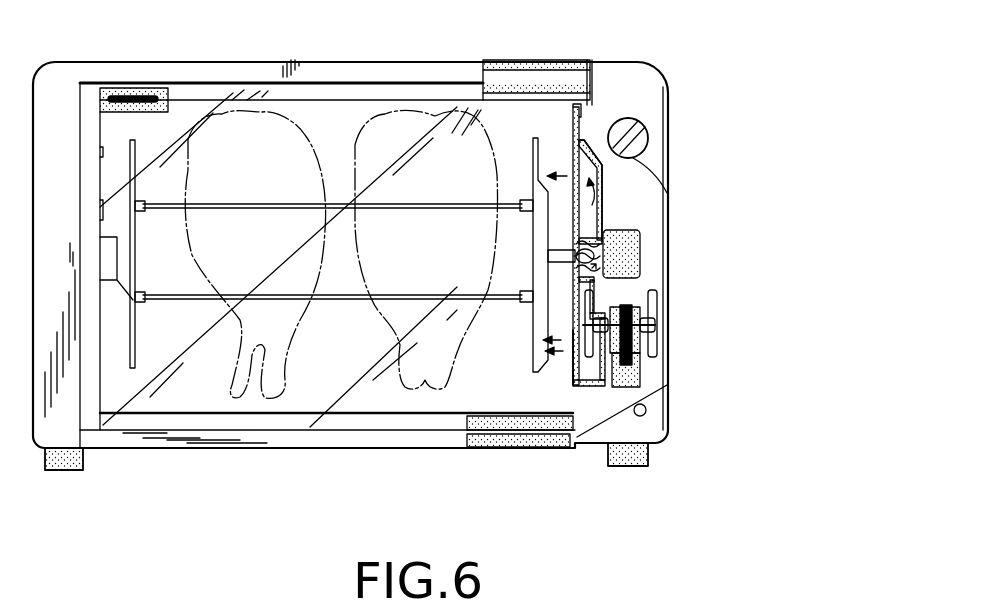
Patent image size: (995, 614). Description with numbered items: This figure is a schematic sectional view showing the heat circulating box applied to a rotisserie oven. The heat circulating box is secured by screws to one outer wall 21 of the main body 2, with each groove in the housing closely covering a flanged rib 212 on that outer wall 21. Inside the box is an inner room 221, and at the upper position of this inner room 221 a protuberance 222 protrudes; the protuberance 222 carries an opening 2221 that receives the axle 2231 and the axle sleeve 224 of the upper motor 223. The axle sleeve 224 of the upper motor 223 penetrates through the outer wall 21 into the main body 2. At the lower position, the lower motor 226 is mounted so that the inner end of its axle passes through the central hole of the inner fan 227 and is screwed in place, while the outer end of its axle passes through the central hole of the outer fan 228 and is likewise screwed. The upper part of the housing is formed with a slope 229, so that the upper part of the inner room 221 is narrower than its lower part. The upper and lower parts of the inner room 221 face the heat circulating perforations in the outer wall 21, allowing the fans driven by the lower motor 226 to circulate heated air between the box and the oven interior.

The main body 2 is at (667, 83).
The outer wall 21 is at (567, 372).
The flanged rib 212 is at (577, 372).
The inner room 221 is at (590, 383).
The protuberance 222 is at (690, 311).
The opening 2221 is at (640, 260).
The upper motor 223 is at (640, 247).
The axle 2231 is at (585, 238).
The axle sleeve 224 is at (575, 228).
The lower motor 226 is at (627, 305).
The inner fan 227 is at (573, 350).
The outer fan 228 is at (653, 345).
The slope 229 is at (590, 150).